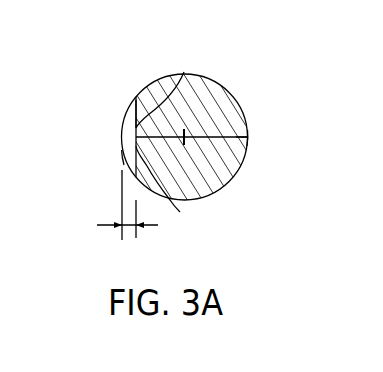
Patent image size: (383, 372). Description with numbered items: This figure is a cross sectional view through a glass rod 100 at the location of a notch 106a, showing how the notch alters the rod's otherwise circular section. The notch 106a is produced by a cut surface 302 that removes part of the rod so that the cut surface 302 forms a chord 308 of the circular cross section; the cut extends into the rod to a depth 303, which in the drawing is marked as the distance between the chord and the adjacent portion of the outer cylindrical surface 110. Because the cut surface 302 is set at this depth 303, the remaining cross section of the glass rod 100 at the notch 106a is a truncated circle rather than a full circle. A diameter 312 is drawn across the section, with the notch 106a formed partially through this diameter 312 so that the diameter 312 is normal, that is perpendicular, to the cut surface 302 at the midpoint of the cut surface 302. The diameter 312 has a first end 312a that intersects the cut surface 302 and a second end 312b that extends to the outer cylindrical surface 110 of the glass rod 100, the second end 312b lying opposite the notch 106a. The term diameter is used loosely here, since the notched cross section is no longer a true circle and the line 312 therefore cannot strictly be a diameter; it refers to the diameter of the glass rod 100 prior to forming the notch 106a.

The glass rod 100 is at (245, 77).
The outer cylindrical surface 110 is at (136, 96).
The cut surface 302 is at (134, 112).
The first end 312a is at (181, 82).
The diameter 312 is at (240, 134).
The second end 312b is at (254, 139).
The notch 106a is at (127, 156).
The chord 308 is at (178, 209).
The depth 303 is at (128, 237).